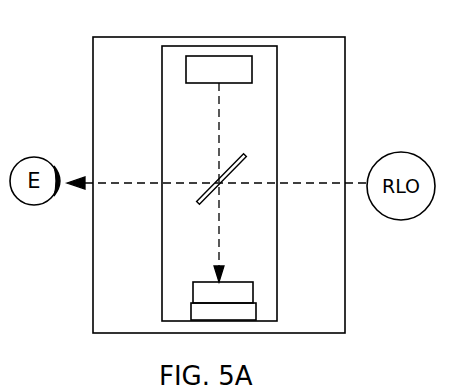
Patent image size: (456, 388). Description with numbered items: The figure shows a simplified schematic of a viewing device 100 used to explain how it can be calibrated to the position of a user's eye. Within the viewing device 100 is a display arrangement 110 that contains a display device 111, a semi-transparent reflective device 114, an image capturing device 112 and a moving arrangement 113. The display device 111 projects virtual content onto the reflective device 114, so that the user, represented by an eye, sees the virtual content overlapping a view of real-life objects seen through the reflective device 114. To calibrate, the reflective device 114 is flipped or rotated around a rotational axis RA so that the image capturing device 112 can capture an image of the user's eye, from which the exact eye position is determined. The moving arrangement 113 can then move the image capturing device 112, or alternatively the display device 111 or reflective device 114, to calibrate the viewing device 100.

The viewing device 100 is at (346, 68).
The display arrangement 110 is at (277, 57).
The display device 111 is at (219, 69).
The image capturing device 112 is at (223, 293).
The moving arrangement 113 is at (223, 311).
The reflective device 114 is at (243, 158).
The rotational axis RA is at (222, 190).